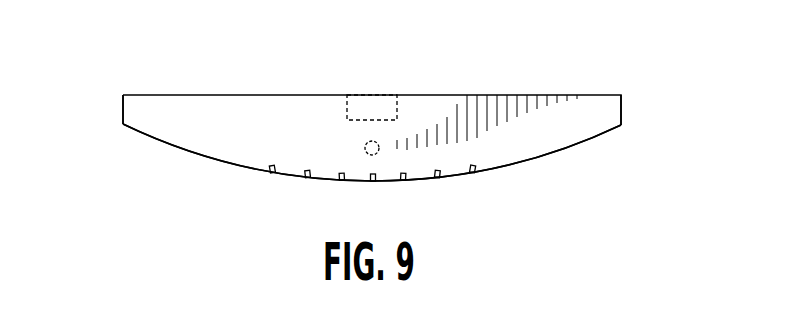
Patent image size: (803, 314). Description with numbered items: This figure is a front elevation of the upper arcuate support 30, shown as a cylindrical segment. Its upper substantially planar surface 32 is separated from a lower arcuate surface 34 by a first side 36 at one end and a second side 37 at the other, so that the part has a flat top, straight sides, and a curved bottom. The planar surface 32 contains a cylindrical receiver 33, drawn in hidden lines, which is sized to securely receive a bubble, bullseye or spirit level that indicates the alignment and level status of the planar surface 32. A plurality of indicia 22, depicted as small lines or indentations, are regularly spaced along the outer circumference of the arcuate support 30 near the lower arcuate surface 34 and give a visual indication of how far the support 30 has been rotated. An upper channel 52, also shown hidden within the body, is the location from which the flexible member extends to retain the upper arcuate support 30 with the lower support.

The upper arcuate support 30 is at (80, 112).
The first side 36 is at (123, 115).
The second side 37 is at (623, 111).
The lower arcuate surface 34 is at (182, 154).
The indicia 22 is at (272, 172).
The cylindrical receiver 33 is at (366, 107).
The upper channel 52 is at (379, 147).
The upper substantially planar surface 32 is at (575, 96).